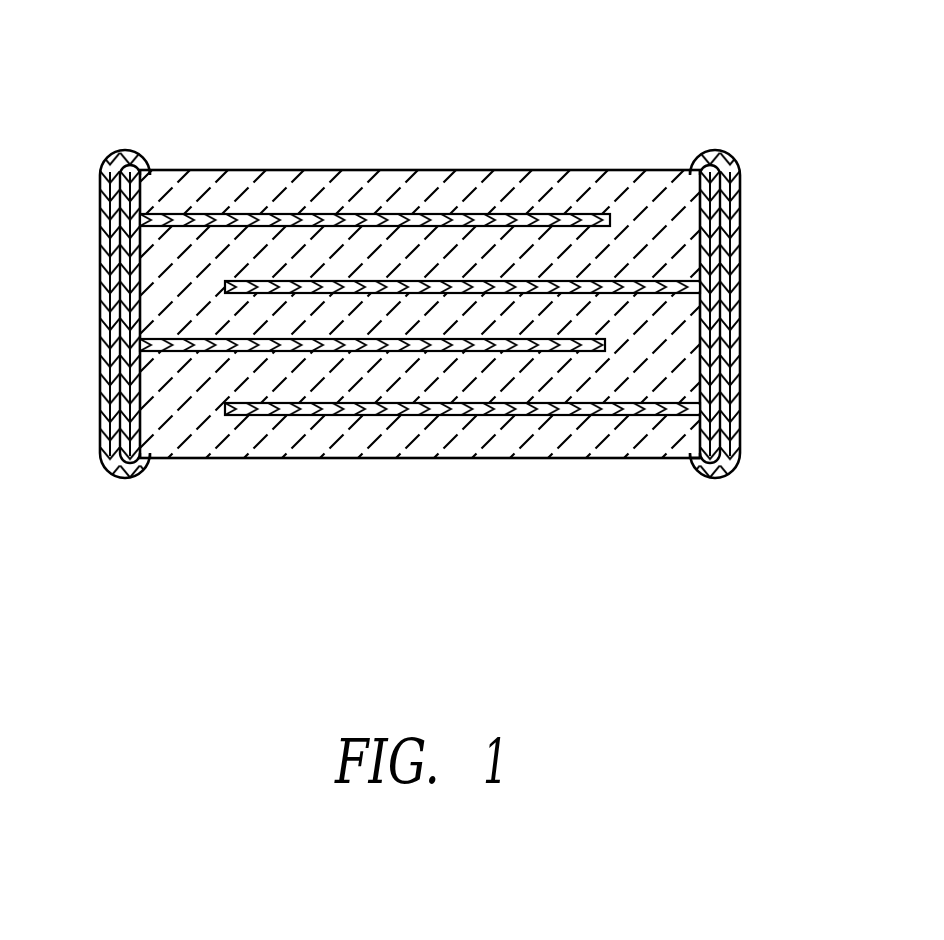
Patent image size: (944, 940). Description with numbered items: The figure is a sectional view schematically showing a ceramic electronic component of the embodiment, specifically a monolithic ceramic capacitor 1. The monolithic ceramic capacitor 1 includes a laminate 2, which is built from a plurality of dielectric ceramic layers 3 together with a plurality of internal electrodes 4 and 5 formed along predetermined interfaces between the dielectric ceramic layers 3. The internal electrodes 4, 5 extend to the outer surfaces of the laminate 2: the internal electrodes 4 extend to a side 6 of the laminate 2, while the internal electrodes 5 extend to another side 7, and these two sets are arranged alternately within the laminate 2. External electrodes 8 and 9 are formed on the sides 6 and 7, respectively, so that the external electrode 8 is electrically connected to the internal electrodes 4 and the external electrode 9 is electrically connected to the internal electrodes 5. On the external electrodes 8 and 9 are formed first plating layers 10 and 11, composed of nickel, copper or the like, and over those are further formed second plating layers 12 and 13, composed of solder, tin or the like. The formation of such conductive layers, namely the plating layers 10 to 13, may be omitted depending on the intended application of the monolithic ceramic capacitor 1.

The monolithic ceramic capacitor 1 is at (55, 37).
The laminate 2 is at (382, 458).
The dielectric ceramic layers 3 is at (386, 305).
The internal electrodes 4 is at (247, 340).
The internal electrodes 5 is at (647, 487).
The side of the laminate 6 is at (118, 288).
The another side of the laminate 7 is at (703, 293).
The external electrode 8 is at (118, 222).
The external electrode 9 is at (707, 203).
The first plating layer 10 is at (122, 377).
The first plating layer 11 is at (723, 373).
The second plating layer 12 is at (108, 437).
The second plating layer 13 is at (730, 432).